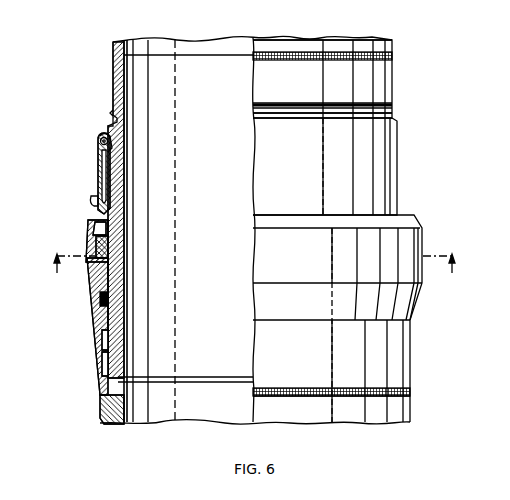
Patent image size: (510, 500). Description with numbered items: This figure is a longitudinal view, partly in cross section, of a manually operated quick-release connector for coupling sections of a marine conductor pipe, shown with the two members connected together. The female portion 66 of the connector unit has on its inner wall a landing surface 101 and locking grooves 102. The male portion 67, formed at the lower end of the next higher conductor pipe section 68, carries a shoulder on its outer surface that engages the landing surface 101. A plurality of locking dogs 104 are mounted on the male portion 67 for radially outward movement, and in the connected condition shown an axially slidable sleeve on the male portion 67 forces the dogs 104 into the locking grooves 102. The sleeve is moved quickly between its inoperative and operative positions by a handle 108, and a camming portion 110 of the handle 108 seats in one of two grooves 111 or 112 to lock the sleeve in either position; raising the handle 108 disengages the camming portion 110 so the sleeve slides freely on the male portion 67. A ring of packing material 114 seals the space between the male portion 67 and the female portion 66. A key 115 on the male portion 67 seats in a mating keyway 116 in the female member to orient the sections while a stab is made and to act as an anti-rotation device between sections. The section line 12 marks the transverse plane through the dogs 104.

The section line 12- 12 is at (252, 274).
The female portion 66 is at (100, 400).
The male portion 67 is at (113, 89).
The conductor pipe section 68 is at (293, 39).
The landing surface 101 is at (93, 330).
The locking grooves 102 is at (92, 245).
The locking dogs 104 is at (118, 251).
The handle 108 is at (97, 192).
The camming portion 110 is at (108, 143).
The groove 111 is at (113, 113).
The groove 112 is at (112, 150).
The ring of packing material 114 is at (93, 298).
The key 115 is at (97, 365).
The keyway 116 is at (93, 345).